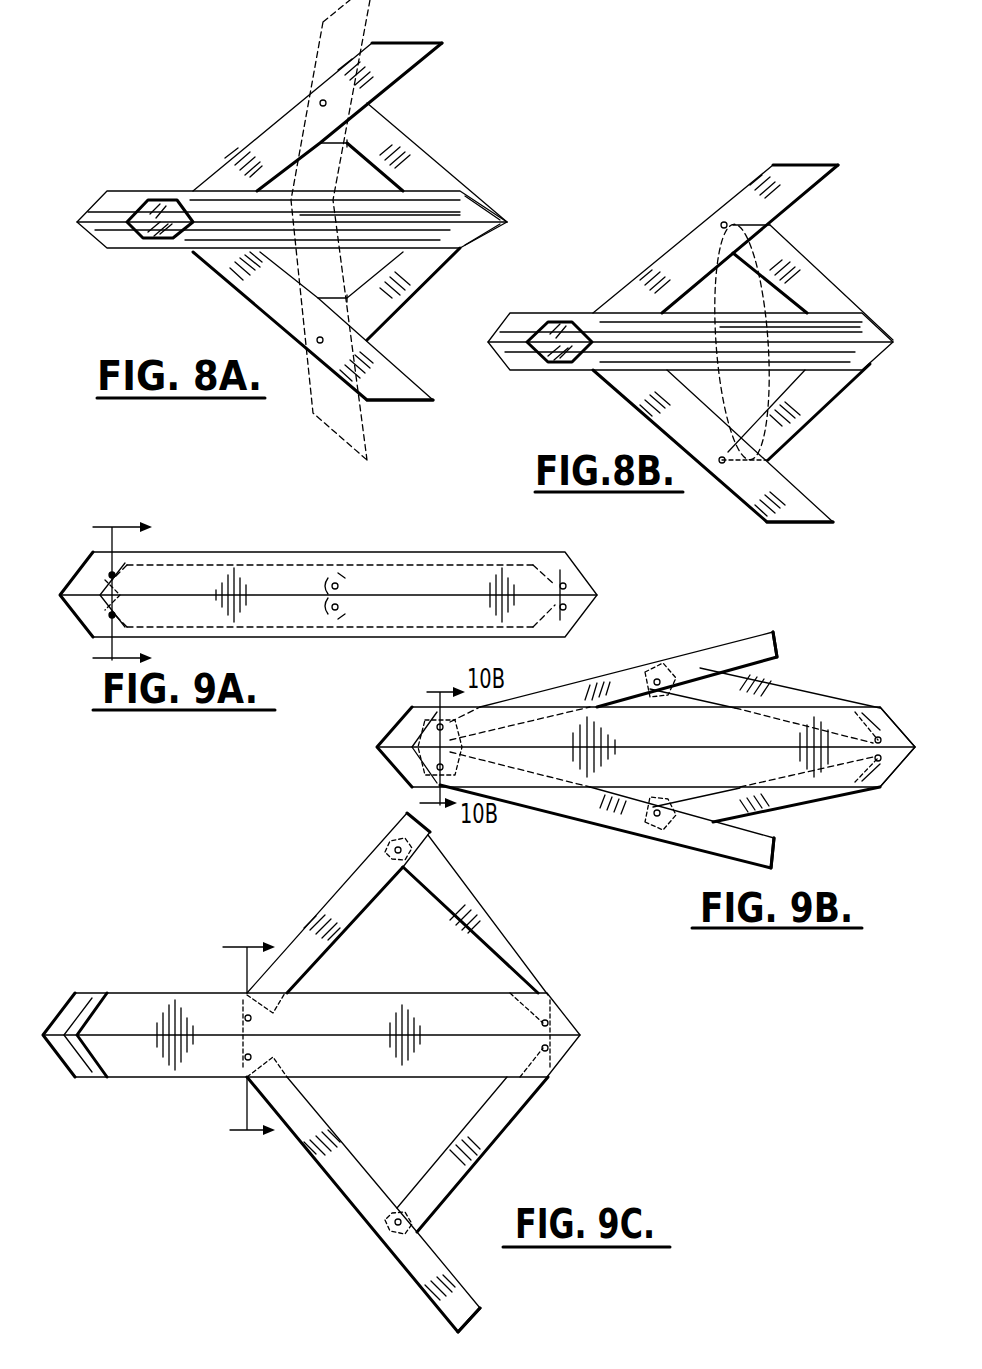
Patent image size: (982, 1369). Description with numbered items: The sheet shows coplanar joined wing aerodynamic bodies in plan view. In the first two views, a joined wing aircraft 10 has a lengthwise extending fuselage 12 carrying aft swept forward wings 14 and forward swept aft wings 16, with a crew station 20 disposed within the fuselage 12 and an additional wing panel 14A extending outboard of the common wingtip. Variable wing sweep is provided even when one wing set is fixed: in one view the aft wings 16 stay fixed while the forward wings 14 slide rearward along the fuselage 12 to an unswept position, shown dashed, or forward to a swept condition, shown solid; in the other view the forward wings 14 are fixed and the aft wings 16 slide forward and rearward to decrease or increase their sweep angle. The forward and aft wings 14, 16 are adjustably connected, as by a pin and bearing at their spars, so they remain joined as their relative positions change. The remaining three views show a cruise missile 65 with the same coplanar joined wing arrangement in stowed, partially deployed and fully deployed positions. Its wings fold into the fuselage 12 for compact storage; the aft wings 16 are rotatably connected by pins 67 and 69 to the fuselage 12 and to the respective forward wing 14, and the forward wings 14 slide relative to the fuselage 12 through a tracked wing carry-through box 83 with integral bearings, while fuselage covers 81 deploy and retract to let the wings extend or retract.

In FIG. 8A, the joined wing aircraft 10 is at (195, 106).
In FIG. 8B, the joined wing aircraft 10 is at (685, 178).
In FIG. 8A, the fuselage 12 is at (120, 200).
In FIG. 8B, the fuselage 12 is at (527, 317).
In FIG. 9A, the fuselage 12 is at (473, 610).
In FIG. 9B, the fuselage 12 is at (646, 747).
In FIG. 9C, the fuselage 12 is at (403, 1010).
In FIG. 8A, the forward wings 14 is at (278, 145).
In FIG. 8B, the forward wings 14 is at (667, 270).
In FIG. 9B, the forward wings 14 is at (617, 682).
In FIG. 9C, the forward wings 14 is at (358, 885).
In FIG. 8A, the additional wing panel 14A is at (320, 52).
In FIG. 8B, the additional wing panel 14A is at (793, 180).
In FIG. 9B, the additional wing panel 14A is at (750, 653).
In FIG. 9C, the additional wing panel 14A is at (407, 813).
In FIG. 8A, the aft wings 16 is at (413, 165).
In FIG. 8B, the aft wings 16 is at (800, 272).
In FIG. 9B, the aft wings 16 is at (765, 697).
In FIG. 9C, the aft wings 16 is at (487, 940).
In FIG. 8A, the crew station 20 is at (170, 238).
In FIG. 8B, the crew station 20 is at (568, 355).
In FIG. 9A, the missile 65 is at (286, 538).
In FIG. 9C, the missile 65 is at (255, 890).
In FIG. 9A, the pin 67 is at (560, 583).
In FIG. 9B, the pin 67 is at (878, 737).
In FIG. 9C, the pin 67 is at (543, 1023).
In FIG. 9A, the pin 69 is at (337, 583).
In FIG. 9B, the pin 69 is at (660, 680).
In FIG. 9C, the pin 69 is at (403, 851).
In FIG. 9A, the fuselage covers 81 is at (405, 580).
In FIG. 9B, the fuselage covers 81 is at (553, 727).
In FIG. 9C, the fuselage covers 81 is at (203, 1003).
In FIG. 9A, the wing carry-through box 83 is at (117, 603).
In FIG. 9B, the wing carry-through box 83 is at (410, 738).
In FIG. 9C, the wing carry-through box 83 is at (253, 1038).